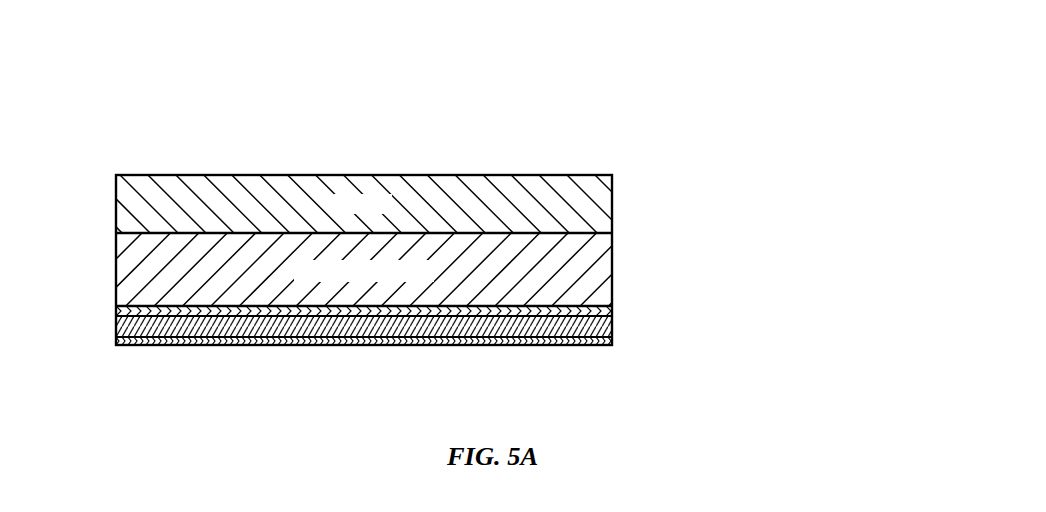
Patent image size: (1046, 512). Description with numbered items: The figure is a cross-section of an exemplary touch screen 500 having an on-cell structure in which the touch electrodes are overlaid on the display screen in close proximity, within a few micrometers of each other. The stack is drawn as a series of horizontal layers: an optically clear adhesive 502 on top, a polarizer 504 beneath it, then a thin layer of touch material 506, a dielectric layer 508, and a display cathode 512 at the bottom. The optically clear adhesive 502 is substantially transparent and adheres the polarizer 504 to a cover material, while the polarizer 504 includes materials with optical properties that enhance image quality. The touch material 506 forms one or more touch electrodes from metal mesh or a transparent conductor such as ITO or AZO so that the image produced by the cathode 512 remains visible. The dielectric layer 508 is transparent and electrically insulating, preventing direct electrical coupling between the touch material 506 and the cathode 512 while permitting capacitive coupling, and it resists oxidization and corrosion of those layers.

The touch screen 500 is at (150, 128).
The optically clear adhesive 502 is at (128, 187).
The polarizer 504 is at (128, 266).
The touch material 506 is at (613, 311).
The dielectric layer 508 is at (613, 327).
The display cathode 512 is at (613, 342).